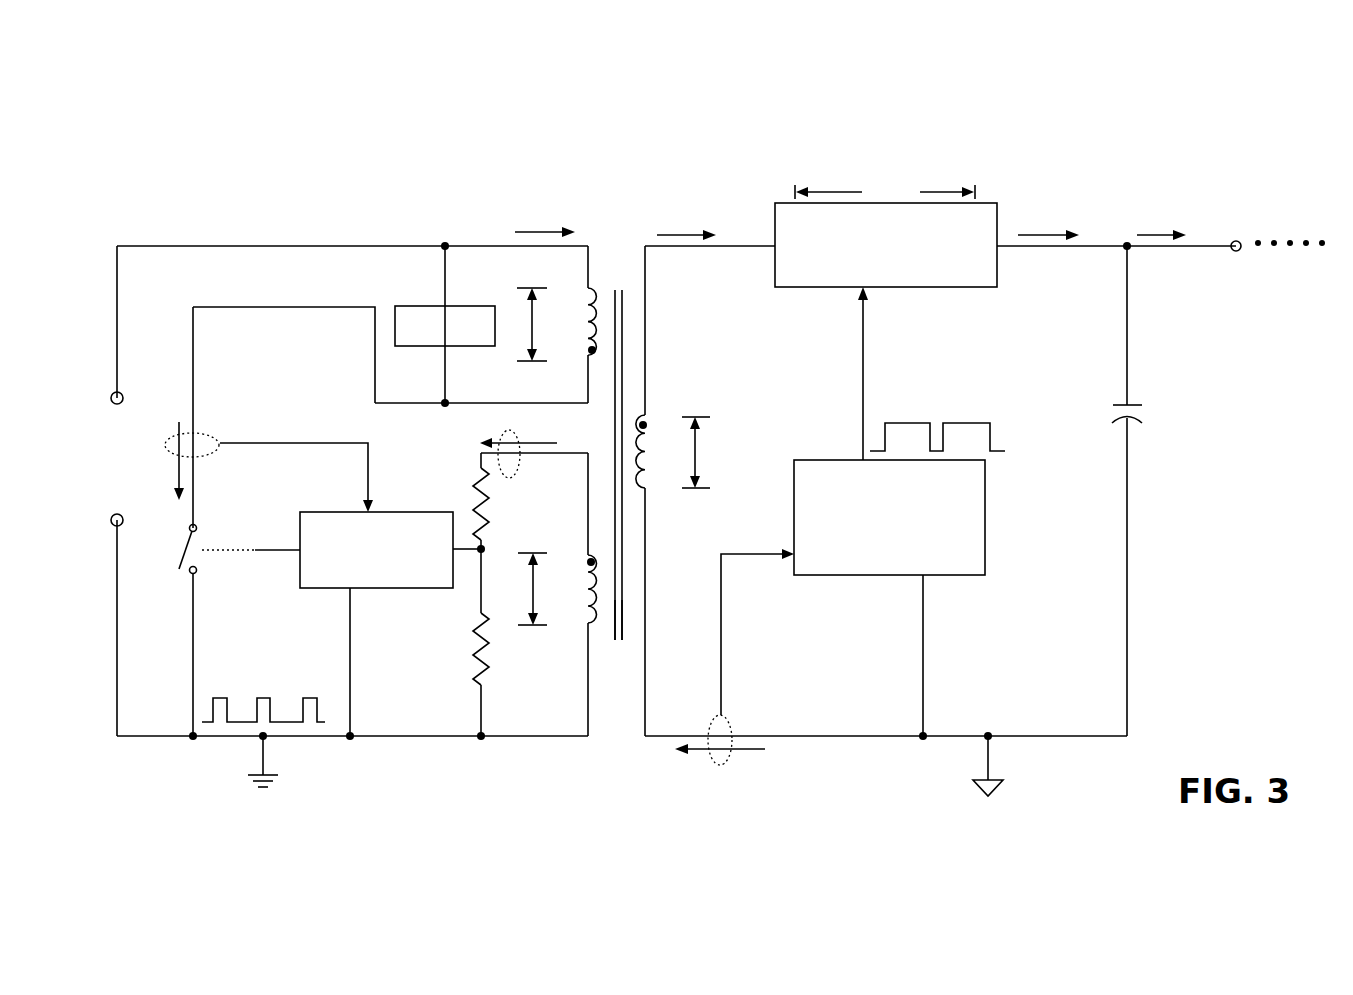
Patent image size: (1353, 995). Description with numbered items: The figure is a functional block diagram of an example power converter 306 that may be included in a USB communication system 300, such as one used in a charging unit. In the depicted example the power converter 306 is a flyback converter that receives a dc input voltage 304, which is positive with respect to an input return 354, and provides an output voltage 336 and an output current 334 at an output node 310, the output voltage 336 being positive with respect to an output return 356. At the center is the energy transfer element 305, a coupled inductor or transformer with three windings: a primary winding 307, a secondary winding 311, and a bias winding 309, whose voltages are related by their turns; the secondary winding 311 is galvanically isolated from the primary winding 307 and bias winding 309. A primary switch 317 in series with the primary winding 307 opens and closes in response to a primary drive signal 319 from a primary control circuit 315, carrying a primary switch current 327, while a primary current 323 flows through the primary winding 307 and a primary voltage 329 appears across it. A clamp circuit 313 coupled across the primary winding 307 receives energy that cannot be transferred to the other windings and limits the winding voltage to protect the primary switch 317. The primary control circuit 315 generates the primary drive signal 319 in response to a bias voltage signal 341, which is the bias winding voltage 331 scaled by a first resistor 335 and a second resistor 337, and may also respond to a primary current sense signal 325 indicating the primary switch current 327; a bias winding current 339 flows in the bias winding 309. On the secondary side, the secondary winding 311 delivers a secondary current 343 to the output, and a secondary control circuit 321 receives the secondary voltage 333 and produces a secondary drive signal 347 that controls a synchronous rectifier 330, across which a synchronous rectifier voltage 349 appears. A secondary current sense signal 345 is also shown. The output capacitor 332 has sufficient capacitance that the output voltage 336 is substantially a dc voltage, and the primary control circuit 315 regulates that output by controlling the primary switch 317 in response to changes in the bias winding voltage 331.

The USB communication system 300 is at (1246, 86).
The dc input voltage VIN 304 is at (105, 458).
The energy transfer element T1 305 is at (620, 642).
The power converter 306 is at (817, 95).
The primary winding 307 is at (592, 303).
The bias winding 309 is at (582, 566).
The node N1 310 is at (1234, 214).
The secondary winding 311 is at (664, 432).
The clamp circuit 313 is at (404, 300).
The primary control circuit 315 is at (410, 598).
The primary switch S1 317 is at (186, 598).
The primary drive signal 319 is at (274, 558).
The secondary control circuit 321 is at (848, 456).
The primary current IP 323 is at (516, 205).
The primary current sense signal 325 is at (272, 450).
The primary switch current ID 327 is at (185, 352).
The primary voltage VP 329 is at (532, 366).
The synchronous rectifier 330 is at (784, 203).
The bias winding voltage VB 331 is at (544, 634).
The output capacitor CO 332 is at (1108, 450).
The secondary voltage VS 333 is at (704, 410).
The output current IO 334 is at (1164, 204).
The resistor R1 335 is at (464, 472).
The output voltage VO 336 is at (1167, 378).
The resistor R2 337 is at (458, 672).
The bias winding current IB 339 is at (560, 440).
The bias voltage signal 341 is at (488, 546).
The secondary current IS 343 is at (680, 204).
The primary current sense signal 345 is at (720, 646).
The secondary drive signal 347 is at (864, 342).
The synchronous rectifier voltage VSR 349 is at (864, 184).
The input return 354 is at (256, 786).
The output return 356 is at (974, 786).